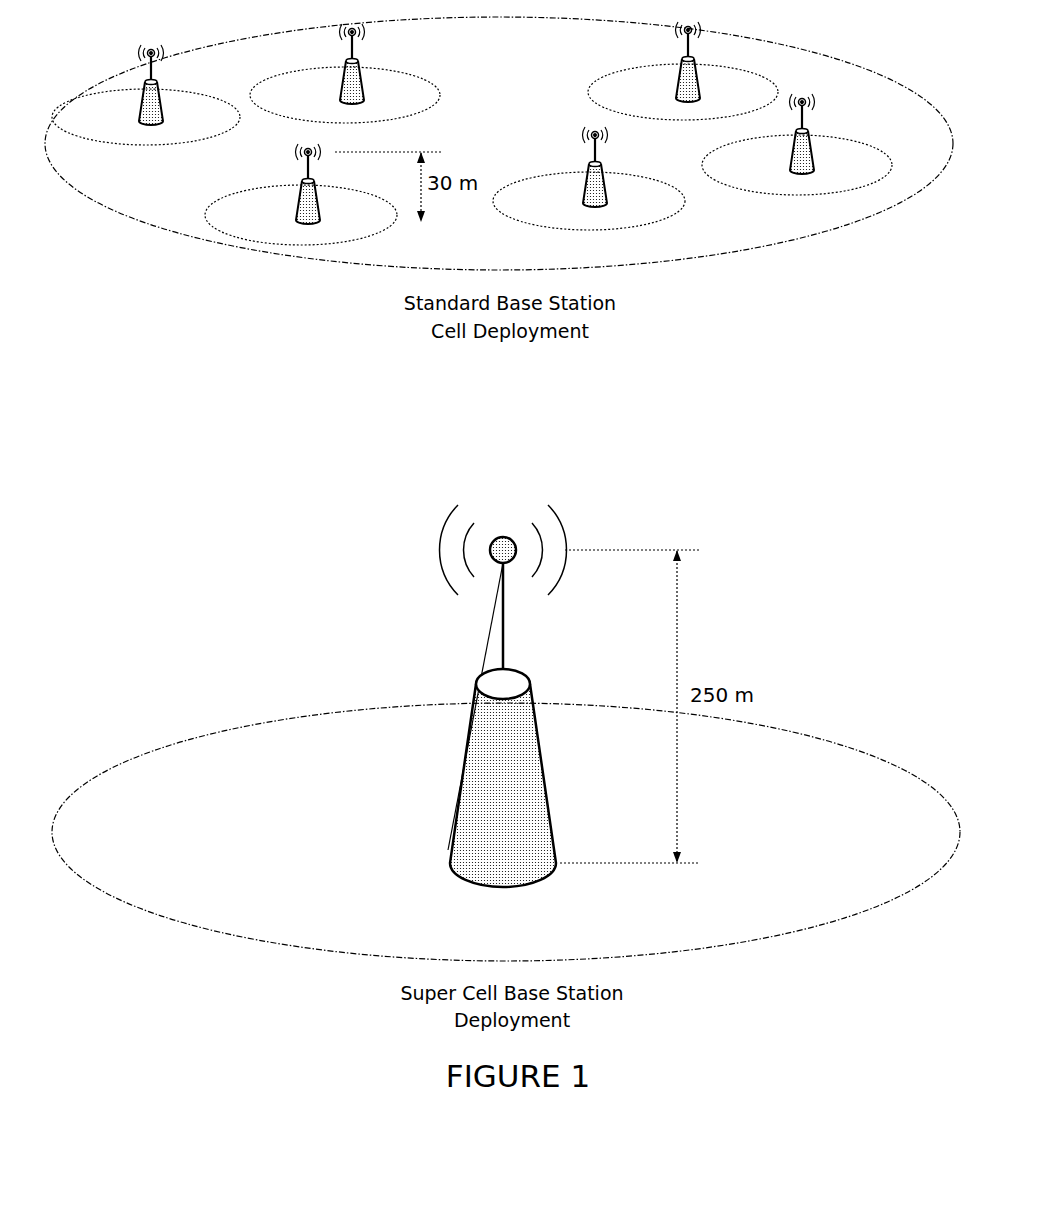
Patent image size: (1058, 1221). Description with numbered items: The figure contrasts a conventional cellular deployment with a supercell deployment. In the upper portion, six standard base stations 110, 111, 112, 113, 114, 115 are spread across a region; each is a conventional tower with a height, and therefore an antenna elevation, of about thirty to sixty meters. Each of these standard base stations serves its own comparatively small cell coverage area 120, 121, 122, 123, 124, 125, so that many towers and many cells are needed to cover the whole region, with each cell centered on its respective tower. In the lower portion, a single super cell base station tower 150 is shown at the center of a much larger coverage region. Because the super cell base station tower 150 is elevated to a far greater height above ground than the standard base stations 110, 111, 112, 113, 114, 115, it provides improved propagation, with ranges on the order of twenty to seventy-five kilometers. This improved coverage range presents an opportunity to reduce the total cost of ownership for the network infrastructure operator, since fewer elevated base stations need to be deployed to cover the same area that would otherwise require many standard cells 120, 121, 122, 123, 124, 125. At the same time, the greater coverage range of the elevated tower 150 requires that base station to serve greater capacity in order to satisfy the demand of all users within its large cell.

The standard base station 110 is at (158, 80).
The standard base station 111 is at (356, 63).
The standard base station 112 is at (307, 180).
The standard base station 113 is at (592, 165).
The standard base station 114 is at (680, 63).
The standard base station 115 is at (812, 130).
The cell coverage area 120 is at (180, 127).
The cell coverage area 121 is at (415, 100).
The cell coverage area 122 is at (233, 211).
The cell coverage area 123 is at (537, 222).
The cell coverage area 124 is at (622, 90).
The cell coverage area 125 is at (782, 178).
The super cell base station tower 150 is at (500, 693).